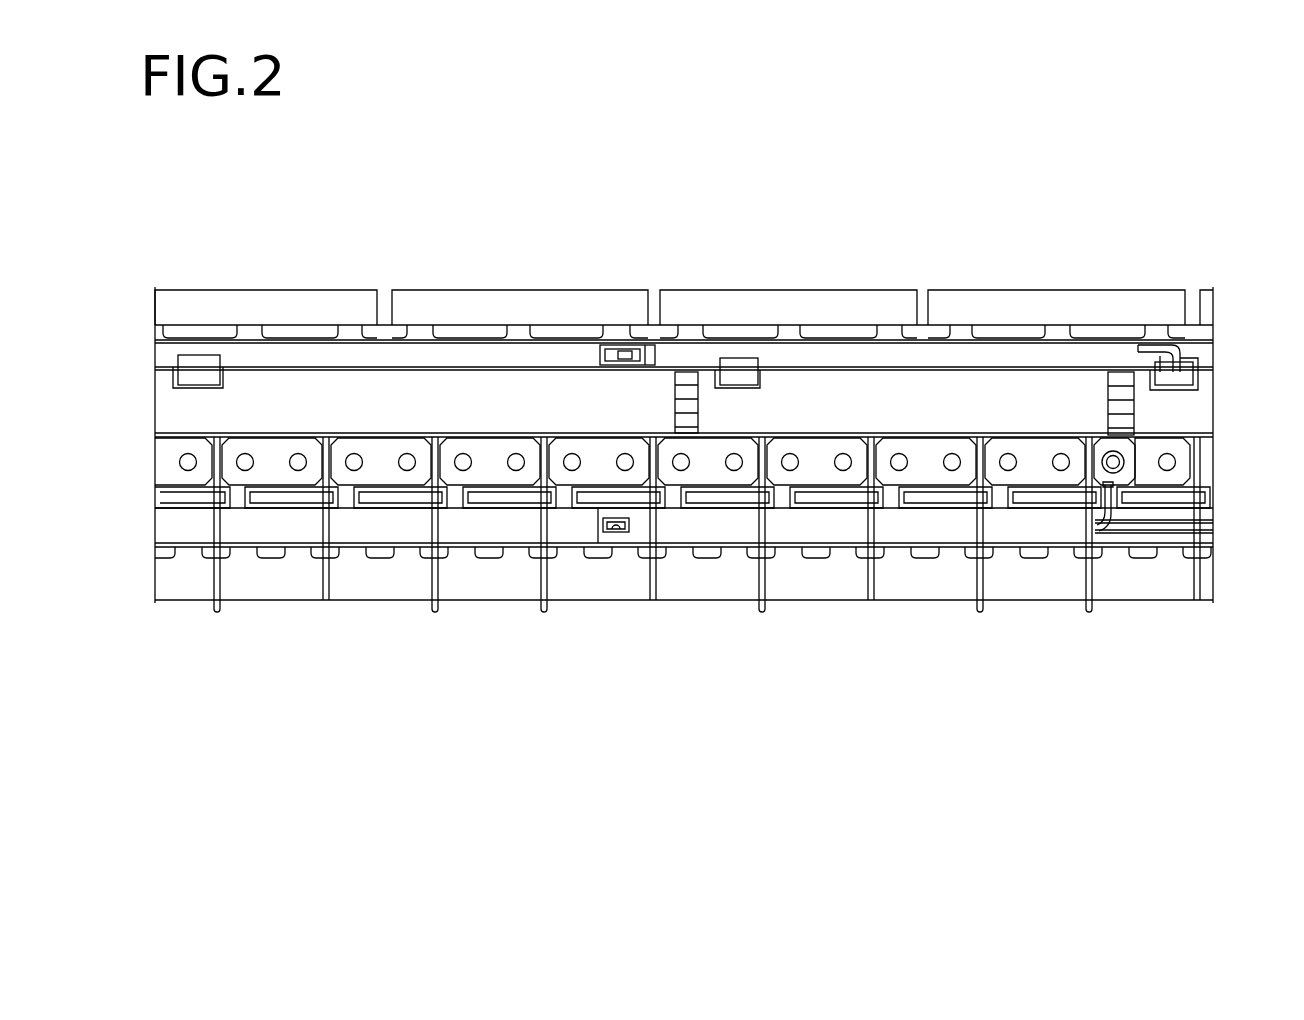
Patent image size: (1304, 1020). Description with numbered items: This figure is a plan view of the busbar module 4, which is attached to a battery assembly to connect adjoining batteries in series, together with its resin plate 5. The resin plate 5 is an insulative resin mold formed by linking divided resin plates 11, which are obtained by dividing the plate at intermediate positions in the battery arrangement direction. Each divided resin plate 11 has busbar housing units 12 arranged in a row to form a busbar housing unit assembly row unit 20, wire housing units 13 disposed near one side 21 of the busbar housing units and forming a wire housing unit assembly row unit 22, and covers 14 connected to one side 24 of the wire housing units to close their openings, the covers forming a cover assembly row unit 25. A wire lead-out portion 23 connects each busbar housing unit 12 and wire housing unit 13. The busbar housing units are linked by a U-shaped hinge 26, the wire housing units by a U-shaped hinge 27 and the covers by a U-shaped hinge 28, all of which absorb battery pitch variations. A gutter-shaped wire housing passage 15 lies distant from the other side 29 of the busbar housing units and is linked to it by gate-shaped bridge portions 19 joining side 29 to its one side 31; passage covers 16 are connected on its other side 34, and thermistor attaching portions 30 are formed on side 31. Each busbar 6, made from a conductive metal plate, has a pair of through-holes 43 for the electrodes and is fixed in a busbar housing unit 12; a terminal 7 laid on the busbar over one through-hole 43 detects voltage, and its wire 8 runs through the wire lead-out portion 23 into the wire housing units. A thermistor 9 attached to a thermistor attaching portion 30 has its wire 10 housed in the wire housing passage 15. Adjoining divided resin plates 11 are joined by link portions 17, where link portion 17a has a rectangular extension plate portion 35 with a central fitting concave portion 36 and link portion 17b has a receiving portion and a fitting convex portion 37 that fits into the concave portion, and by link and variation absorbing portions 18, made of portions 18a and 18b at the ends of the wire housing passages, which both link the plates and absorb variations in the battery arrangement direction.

The busbar module 4 is at (972, 187).
The resin plate 5 is at (775, 733).
The busbar 6 is at (288, 452).
The terminal 7 is at (1135, 455).
The wire 8 is at (1108, 535).
The thermistor 9 is at (1190, 362).
The wire 10 is at (1185, 337).
The divided resin plate 11 is at (533, 645).
The busbar housing unit 12 is at (250, 437).
The wire housing unit 13 is at (252, 535).
The cover 14 is at (250, 588).
The wire housing passage 15 is at (275, 345).
The passage cover 16 is at (205, 305).
The link portion 17 is at (432, 215).
The link portion 17a is at (633, 517).
The link portion 17b is at (593, 528).
The link and variation absorbing portion 18 is at (598, 215).
The link and variation absorbing portion 18a is at (650, 345).
The link and variation absorbing portion 18b is at (600, 345).
The bridge portion 19 is at (690, 403).
The busbar housing unit assembly row unit 20 is at (170, 482).
The one side 21 is at (1187, 505).
The wire housing unit assembly row unit 22 is at (163, 527).
The wire lead-out portion 23 is at (915, 505).
The one side 24 is at (1178, 565).
The cover assembly row unit 25 is at (170, 580).
The U-shaped hinge 26 is at (213, 432).
The U-shaped hinge 27 is at (213, 507).
The U-shaped hinge 28 is at (217, 620).
The other side 29 is at (377, 437).
The thermistor attaching portion 30 is at (193, 368).
The one side 31 is at (287, 385).
The other side 34 is at (310, 340).
The extension plate portion 35 is at (637, 540).
The fitting concave portion 36 is at (615, 532).
The fitting convex portion 37 is at (620, 533).
The through-hole 43 is at (178, 460).